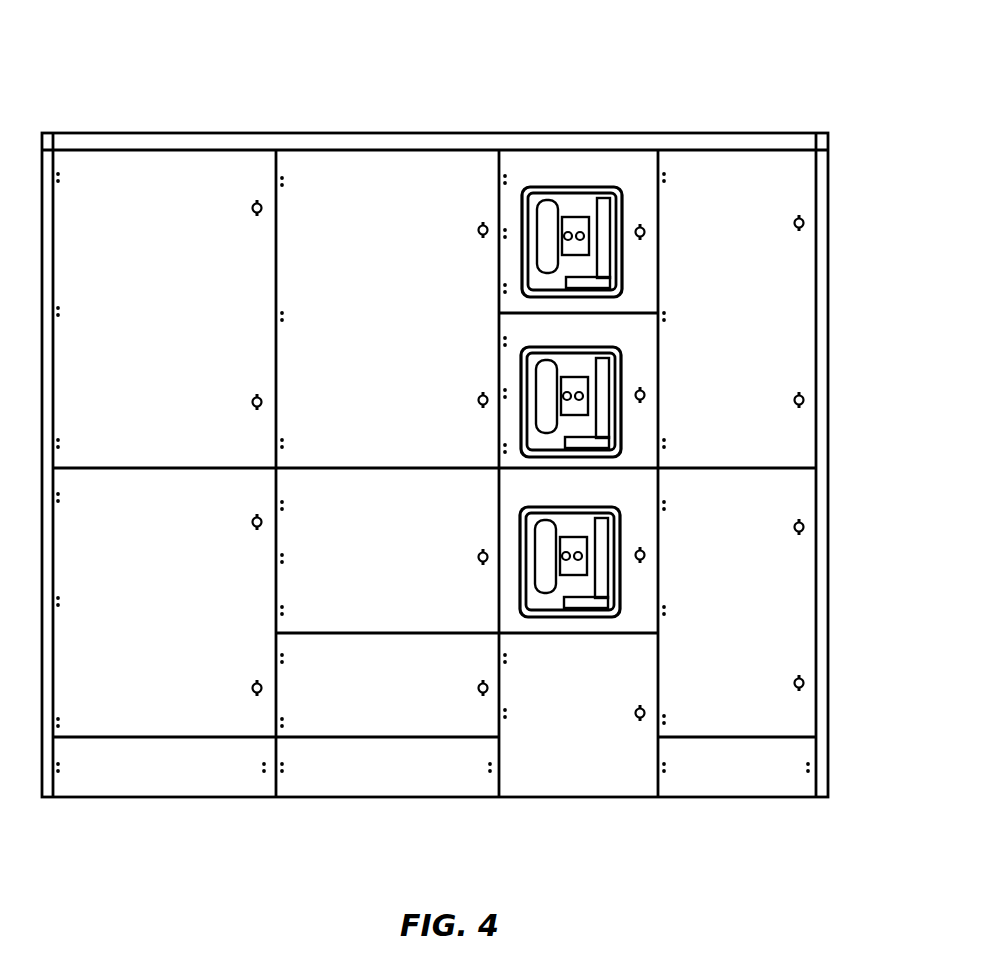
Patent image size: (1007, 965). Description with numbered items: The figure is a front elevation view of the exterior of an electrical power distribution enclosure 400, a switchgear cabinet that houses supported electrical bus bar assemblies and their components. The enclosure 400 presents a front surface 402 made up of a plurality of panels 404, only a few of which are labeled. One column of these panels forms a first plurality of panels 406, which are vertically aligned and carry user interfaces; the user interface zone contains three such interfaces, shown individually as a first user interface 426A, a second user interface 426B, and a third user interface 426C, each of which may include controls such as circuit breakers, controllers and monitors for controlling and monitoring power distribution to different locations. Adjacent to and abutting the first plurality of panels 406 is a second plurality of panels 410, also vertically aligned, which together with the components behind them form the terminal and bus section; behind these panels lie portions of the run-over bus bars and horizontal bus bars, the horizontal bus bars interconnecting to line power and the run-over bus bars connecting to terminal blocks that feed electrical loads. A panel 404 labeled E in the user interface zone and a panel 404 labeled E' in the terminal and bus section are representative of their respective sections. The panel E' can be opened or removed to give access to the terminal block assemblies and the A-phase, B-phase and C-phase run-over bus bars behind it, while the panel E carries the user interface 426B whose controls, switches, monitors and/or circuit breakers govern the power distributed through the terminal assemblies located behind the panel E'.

The electrical power distribution enclosure 400 is at (442, 72).
The front surface 402 is at (143, 190).
The panels 404 is at (186, 317).
The first plurality of panels 406 is at (568, 135).
The second plurality of panels 410 is at (748, 135).
The first user interface 426A is at (622, 200).
The second user interface 426B is at (622, 437).
The third user interface 426C is at (620, 588).
The panel E is at (679, 340).
The panel E' is at (826, 327).